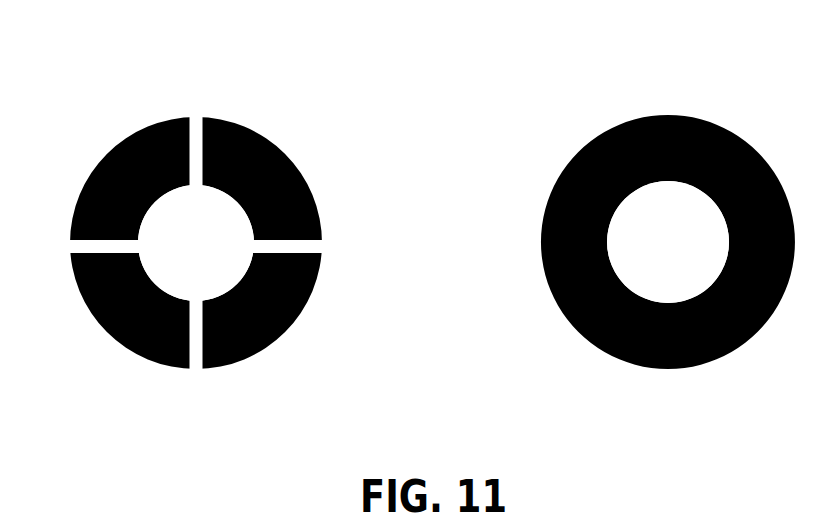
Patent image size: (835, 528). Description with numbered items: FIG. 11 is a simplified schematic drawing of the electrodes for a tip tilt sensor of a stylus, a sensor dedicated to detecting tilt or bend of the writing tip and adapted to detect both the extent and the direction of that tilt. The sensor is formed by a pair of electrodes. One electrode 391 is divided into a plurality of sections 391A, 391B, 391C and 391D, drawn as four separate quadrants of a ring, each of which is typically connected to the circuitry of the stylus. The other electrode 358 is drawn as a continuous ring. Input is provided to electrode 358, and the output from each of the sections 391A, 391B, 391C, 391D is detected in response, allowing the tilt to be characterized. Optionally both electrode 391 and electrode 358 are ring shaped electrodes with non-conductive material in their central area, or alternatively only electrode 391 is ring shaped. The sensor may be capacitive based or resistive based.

The electrode 391 is at (185, 197).
The electrode section 391A is at (287, 153).
The electrode section 391B is at (268, 343).
The electrode section 391C is at (120, 343).
The electrode section 391D is at (105, 157).
The electrode 358 is at (596, 108).